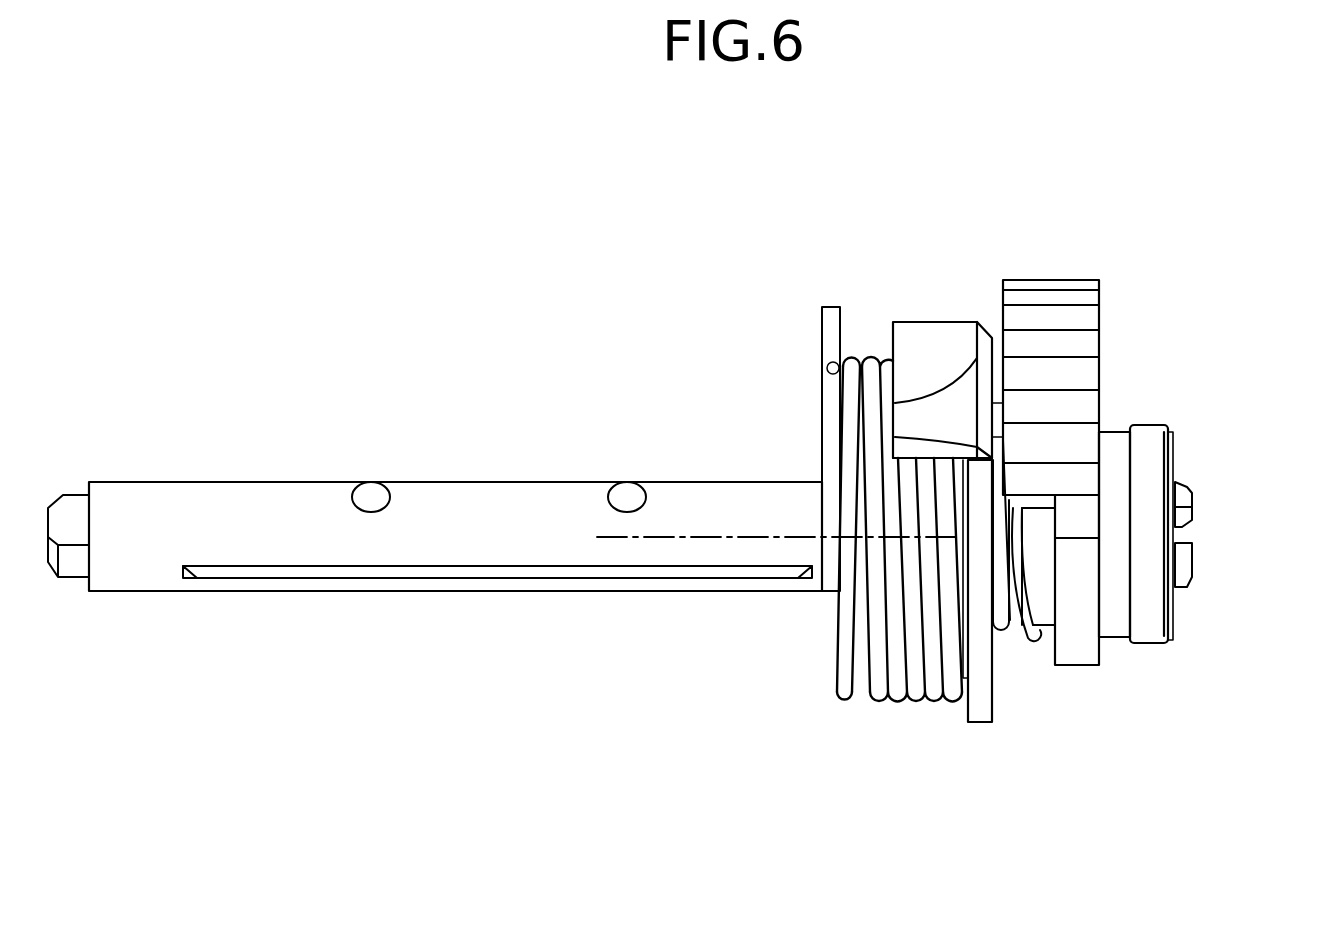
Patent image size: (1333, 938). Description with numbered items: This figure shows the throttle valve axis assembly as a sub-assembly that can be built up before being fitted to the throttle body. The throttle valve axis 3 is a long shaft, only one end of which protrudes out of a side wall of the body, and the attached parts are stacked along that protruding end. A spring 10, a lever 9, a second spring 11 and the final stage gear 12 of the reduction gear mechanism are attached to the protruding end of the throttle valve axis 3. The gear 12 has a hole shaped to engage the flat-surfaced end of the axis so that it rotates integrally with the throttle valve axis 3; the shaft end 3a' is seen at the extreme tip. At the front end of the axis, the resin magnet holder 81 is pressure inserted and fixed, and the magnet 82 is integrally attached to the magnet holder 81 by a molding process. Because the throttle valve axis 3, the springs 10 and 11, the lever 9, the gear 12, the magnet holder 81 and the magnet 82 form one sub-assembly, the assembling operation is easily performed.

The throttle valve axis 3 is at (483, 540).
The engaging end of shaft 3a' is at (1238, 534).
The lever 9 is at (978, 705).
The spring 10 is at (884, 697).
The spring 11 is at (1036, 635).
The final stage gear 12 is at (1044, 300).
The magnet holder 81 is at (1153, 613).
The magnet 82 is at (1115, 442).